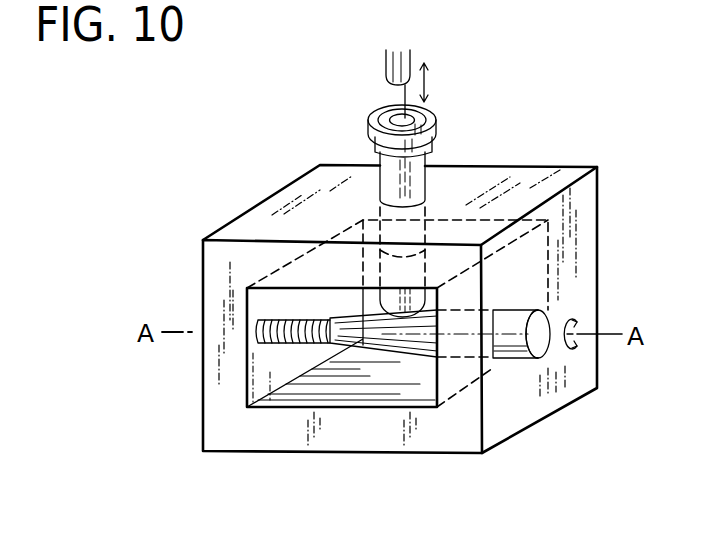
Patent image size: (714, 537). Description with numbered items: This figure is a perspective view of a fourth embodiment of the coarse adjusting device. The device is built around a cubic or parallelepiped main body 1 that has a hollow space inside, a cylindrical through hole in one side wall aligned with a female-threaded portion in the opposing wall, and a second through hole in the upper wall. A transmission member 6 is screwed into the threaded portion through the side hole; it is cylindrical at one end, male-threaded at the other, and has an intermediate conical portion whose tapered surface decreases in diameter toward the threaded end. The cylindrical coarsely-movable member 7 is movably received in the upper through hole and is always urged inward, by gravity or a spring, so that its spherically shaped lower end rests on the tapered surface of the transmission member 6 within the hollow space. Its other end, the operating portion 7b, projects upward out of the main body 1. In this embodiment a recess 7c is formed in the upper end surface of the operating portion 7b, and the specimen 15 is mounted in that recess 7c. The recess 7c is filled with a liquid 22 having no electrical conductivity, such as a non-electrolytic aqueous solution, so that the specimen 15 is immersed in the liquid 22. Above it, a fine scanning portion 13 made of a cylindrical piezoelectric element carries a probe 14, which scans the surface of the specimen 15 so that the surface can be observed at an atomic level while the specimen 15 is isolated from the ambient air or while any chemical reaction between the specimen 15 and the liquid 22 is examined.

The main body 1 is at (582, 235).
The transmission member 6 is at (375, 357).
The coarsely-movable member 7 is at (413, 156).
The operating portion 7b is at (375, 138).
The recess 7c is at (432, 127).
The fine scanning portion 13 is at (385, 72).
The probe 14 is at (400, 103).
The specimen 15 is at (410, 121).
The liquid 22 is at (372, 121).